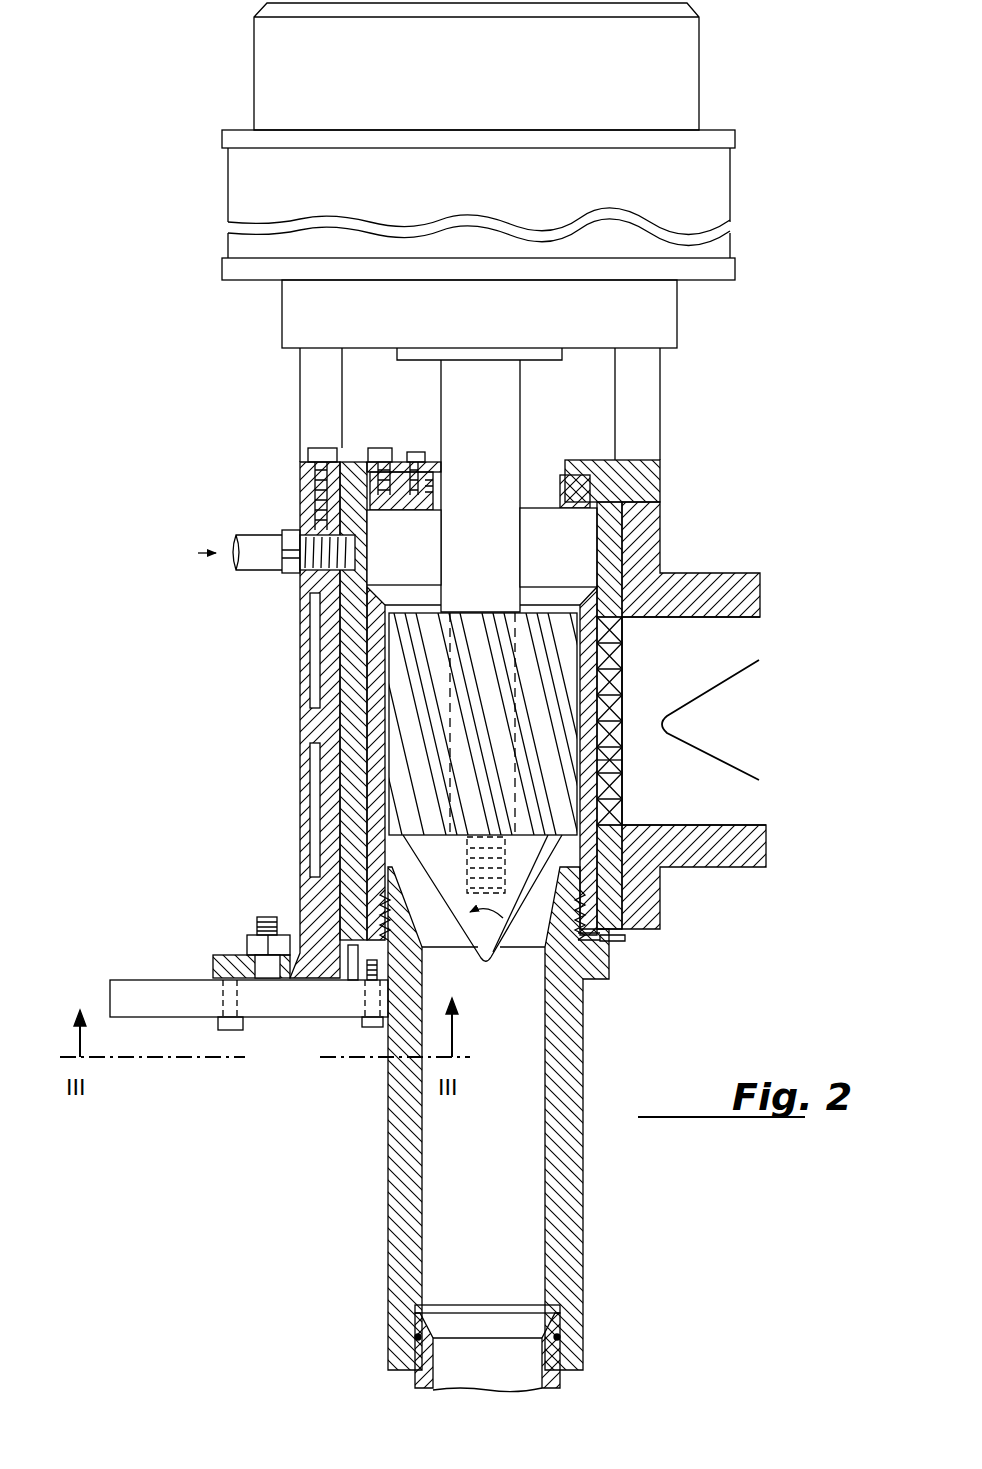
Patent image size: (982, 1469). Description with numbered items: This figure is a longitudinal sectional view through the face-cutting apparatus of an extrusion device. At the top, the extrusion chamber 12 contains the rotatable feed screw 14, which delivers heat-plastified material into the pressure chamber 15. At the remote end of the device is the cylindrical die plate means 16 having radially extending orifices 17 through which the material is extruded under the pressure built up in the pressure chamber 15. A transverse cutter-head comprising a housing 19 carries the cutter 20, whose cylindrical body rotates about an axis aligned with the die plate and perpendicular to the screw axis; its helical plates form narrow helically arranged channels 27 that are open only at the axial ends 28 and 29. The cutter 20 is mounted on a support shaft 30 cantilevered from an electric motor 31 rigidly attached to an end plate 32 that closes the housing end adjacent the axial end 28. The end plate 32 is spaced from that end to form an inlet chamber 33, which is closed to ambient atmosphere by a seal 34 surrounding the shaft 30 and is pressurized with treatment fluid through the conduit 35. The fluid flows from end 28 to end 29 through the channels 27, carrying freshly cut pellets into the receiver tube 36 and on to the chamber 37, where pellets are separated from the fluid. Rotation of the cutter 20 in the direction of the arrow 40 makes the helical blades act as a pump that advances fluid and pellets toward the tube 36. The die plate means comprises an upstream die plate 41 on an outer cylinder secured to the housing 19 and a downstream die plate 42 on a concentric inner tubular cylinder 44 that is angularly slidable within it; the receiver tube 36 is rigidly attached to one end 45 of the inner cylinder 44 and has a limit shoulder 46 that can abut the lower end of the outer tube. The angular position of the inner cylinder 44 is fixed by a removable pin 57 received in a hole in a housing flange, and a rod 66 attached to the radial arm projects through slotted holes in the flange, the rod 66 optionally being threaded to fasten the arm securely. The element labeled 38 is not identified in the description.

The extrusion chamber 12 is at (725, 583).
The feed screw 14 is at (744, 709).
The pressure chamber 15 is at (700, 654).
The die plate means 16 is at (630, 797).
The orifices 17 is at (617, 693).
The housing 19 is at (300, 628).
The cutter 20 is at (425, 700).
The channels 27 is at (540, 753).
The axial end 28 is at (547, 611).
The axial end 29 is at (528, 837).
The support shaft 30 is at (502, 410).
The electric motor 31 is at (715, 184).
The end plate 32 is at (645, 483).
The inlet chamber 33 is at (420, 556).
The seal 34 is at (528, 463).
The conduit 35 is at (245, 543).
The receiver tube 36 is at (428, 1150).
The chamber 37 is at (530, 1322).
The slot 38 is at (318, 688).
The arrow 40 is at (490, 922).
The upstream die plate 41 is at (625, 771).
The downstream die plate 42 is at (625, 762).
The inner tubular cylinder 44 is at (372, 797).
The end of inner cylinder 45 is at (378, 908).
The limit shoulder 46 is at (626, 940).
The removable pin 57 is at (232, 1031).
The rod 66 is at (263, 970).